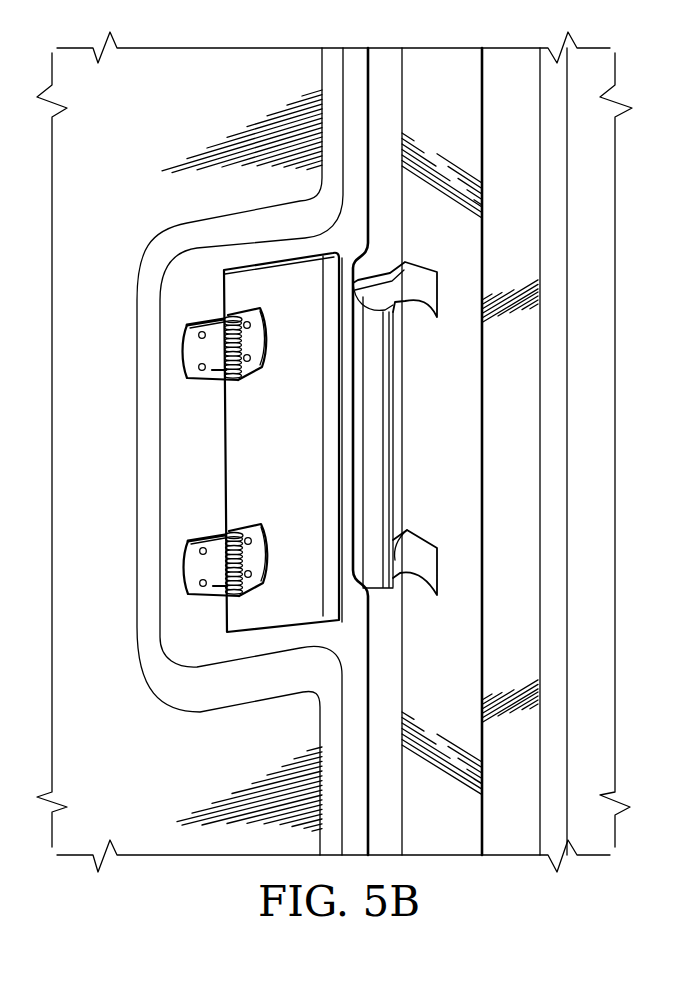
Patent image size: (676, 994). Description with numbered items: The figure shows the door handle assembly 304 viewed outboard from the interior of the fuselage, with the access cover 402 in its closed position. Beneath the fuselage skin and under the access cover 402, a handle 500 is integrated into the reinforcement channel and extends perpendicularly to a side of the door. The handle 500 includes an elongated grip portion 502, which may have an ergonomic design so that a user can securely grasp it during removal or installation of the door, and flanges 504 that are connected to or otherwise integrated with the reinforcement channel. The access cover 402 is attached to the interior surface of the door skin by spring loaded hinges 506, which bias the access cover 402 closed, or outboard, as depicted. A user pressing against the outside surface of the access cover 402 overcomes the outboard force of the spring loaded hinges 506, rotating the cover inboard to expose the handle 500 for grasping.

The door handle assembly 304 is at (245, 257).
The access cover 402 is at (270, 607).
The handle 500 is at (424, 449).
The grip portion 502 is at (393, 400).
The flanges 504 is at (423, 283).
The spring loaded hinges 506 is at (203, 386).